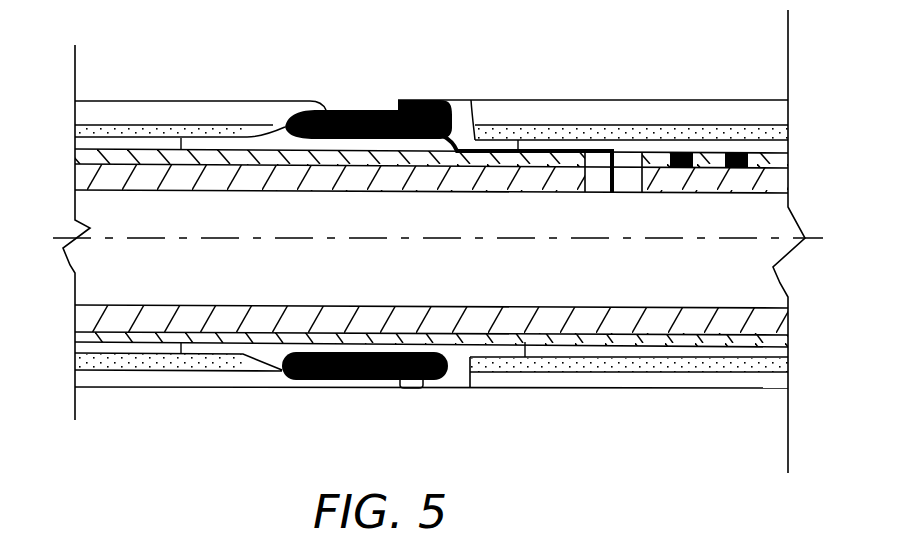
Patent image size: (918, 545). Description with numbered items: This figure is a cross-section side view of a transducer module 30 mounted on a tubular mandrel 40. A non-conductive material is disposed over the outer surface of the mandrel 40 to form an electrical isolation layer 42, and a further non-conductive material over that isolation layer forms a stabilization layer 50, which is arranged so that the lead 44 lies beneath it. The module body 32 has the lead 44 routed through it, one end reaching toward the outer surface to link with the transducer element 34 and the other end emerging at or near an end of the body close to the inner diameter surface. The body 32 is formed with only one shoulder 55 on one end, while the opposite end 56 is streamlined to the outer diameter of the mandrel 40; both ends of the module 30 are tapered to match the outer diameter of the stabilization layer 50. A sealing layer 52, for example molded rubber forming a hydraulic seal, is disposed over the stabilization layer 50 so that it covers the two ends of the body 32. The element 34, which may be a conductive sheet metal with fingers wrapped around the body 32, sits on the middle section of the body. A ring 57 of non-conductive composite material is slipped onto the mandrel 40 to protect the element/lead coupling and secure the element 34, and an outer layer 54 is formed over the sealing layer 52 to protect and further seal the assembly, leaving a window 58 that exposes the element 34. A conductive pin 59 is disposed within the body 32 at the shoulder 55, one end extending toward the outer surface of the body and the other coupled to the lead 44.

The transducer module 30 is at (334, 54).
The module body 32 is at (250, 137).
The transducer element 34 is at (323, 383).
The mandrel 40 is at (790, 315).
The electrical isolation layer 42 is at (78, 152).
The lead 44 is at (471, 100).
The stabilization layer 50 is at (77, 345).
The sealing layer 52 is at (688, 133).
The outer layer 54 is at (600, 382).
The shoulder 55 is at (456, 108).
The opposite end 56 is at (210, 353).
The ring 57 is at (403, 388).
The window 58 is at (355, 380).
The conductive pin 59 is at (417, 102).